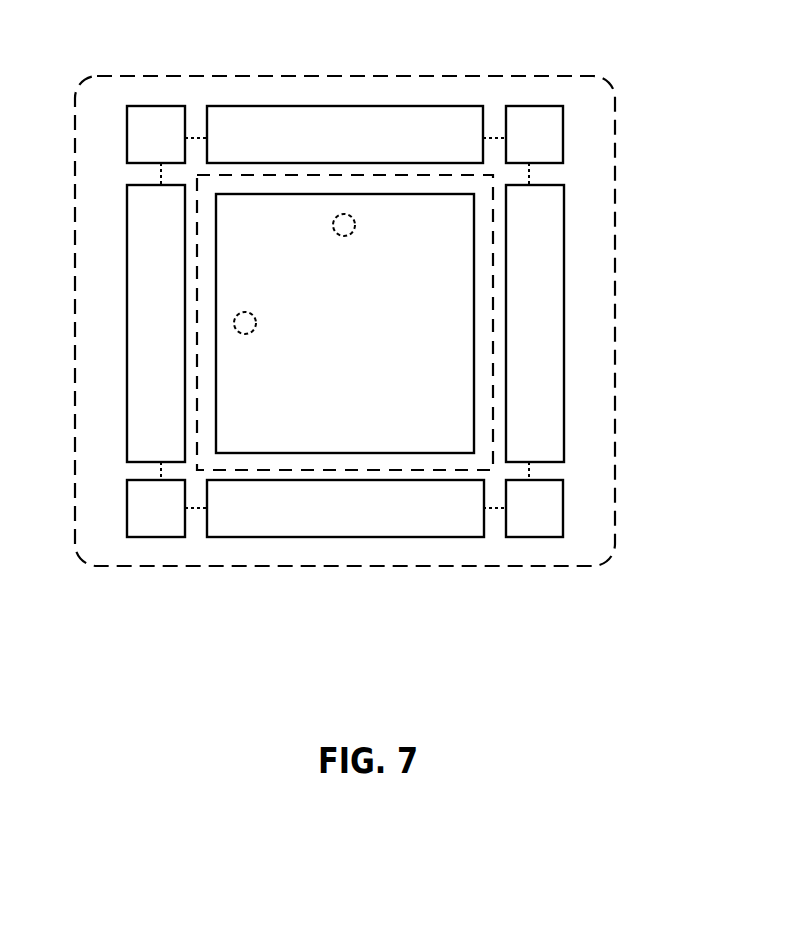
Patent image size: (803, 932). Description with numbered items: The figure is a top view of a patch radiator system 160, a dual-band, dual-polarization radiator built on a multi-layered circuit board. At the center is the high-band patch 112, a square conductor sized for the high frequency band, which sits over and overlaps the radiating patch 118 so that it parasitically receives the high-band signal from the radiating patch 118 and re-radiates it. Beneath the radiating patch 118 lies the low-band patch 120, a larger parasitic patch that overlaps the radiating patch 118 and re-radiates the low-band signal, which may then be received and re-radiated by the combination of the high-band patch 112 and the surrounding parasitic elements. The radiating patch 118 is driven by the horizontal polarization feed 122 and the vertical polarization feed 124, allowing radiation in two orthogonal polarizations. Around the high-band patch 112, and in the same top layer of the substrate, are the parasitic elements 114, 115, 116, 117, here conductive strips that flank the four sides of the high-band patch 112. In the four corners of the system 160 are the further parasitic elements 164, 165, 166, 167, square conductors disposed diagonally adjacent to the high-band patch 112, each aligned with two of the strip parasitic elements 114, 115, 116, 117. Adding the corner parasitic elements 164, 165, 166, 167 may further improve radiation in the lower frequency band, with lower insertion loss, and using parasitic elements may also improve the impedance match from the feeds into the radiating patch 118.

The patch radiator system 160 is at (342, 76).
The parasitic element 164 is at (157, 106).
The parasitic element 165 is at (538, 106).
The parasitic element 166 is at (533, 537).
The parasitic element 167 is at (158, 537).
The parasitic element 115 is at (290, 106).
The parasitic element 117 is at (278, 537).
The parasitic element 114 is at (127, 255).
The parasitic element 116 is at (564, 278).
The radiating patch 118 is at (493, 368).
The high-band patch 112 is at (418, 405).
The low-band patch 120 is at (161, 172).
The horizontal polarization feed 122 is at (255, 318).
The vertical polarization feed 124 is at (355, 223).